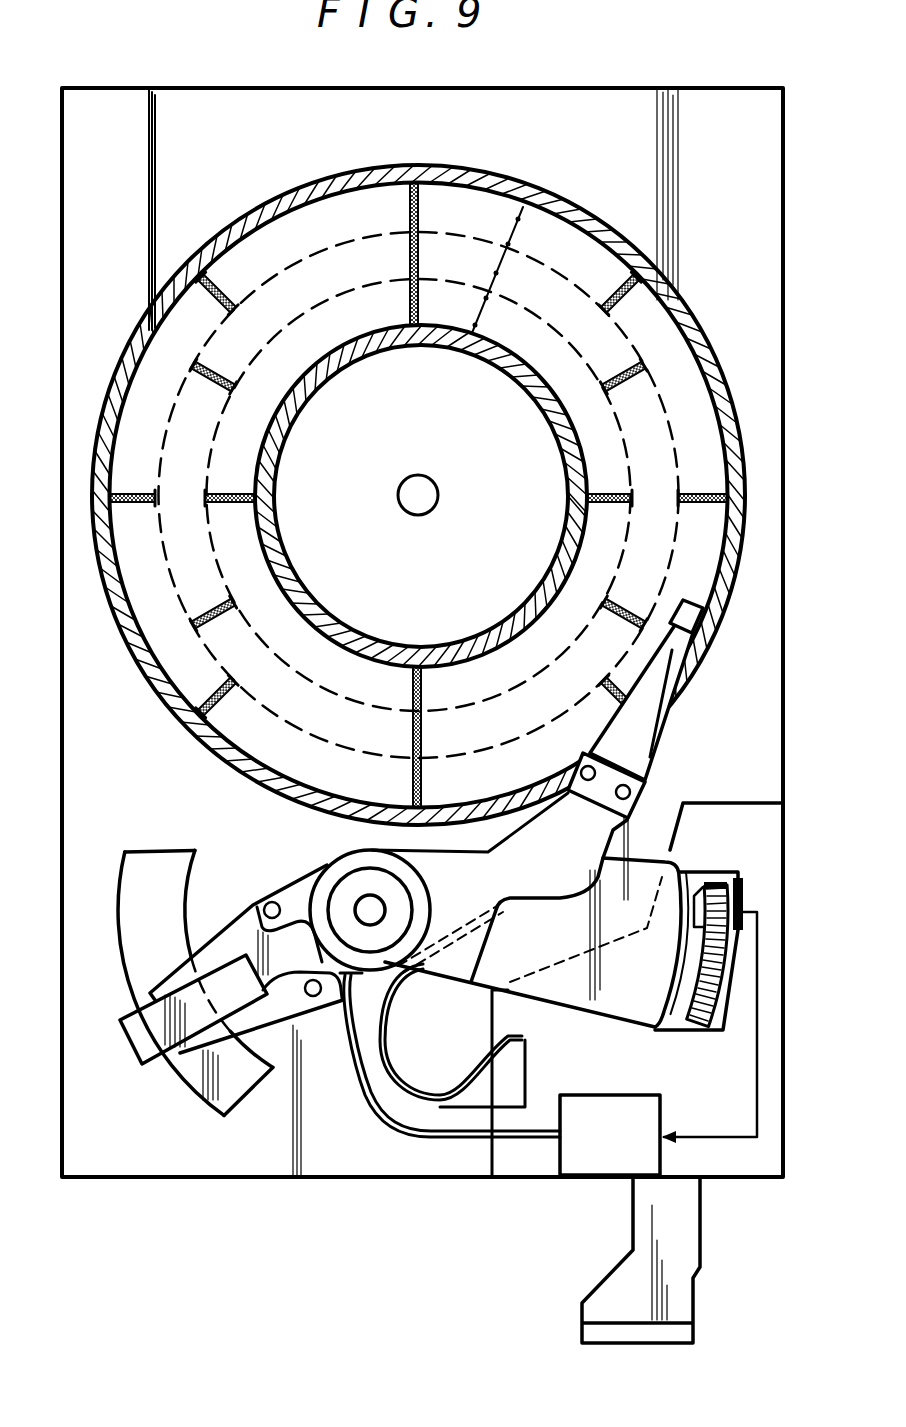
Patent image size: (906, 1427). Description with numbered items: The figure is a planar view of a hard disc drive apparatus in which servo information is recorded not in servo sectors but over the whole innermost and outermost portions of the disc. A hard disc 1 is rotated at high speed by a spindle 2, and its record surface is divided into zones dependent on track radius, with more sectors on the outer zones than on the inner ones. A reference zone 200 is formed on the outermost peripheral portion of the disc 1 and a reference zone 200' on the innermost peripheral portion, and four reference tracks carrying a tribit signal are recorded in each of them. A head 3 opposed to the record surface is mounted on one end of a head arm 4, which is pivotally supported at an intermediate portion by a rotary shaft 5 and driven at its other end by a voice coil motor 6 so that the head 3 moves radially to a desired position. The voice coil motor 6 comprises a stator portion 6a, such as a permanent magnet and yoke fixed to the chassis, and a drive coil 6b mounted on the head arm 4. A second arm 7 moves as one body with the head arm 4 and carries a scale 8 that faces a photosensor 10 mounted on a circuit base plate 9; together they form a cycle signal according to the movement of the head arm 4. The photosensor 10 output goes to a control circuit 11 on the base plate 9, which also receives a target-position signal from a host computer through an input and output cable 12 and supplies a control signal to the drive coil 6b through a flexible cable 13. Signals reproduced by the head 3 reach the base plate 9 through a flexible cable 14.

The hard disc 1 is at (588, 215).
The spindle 2 is at (418, 515).
The head 3 is at (700, 622).
The head arm 4 is at (636, 765).
The rotary shaft 5 is at (367, 906).
The voice coil motor 6 is at (165, 1140).
The stator portion 6a is at (163, 860).
The drive coil 6b is at (130, 1057).
The second arm 7 is at (630, 873).
The scale 8 is at (700, 1030).
The circuit base plate 9 is at (752, 1165).
The photosensor 10 is at (698, 897).
The control circuit 11 is at (600, 1095).
The input and output cable 12 is at (682, 1300).
The flexible cable 13 is at (390, 1127).
The flexible cable 14 is at (475, 1093).
The reference zone 200 is at (418, 478).
The reference zone 200' is at (421, 496).